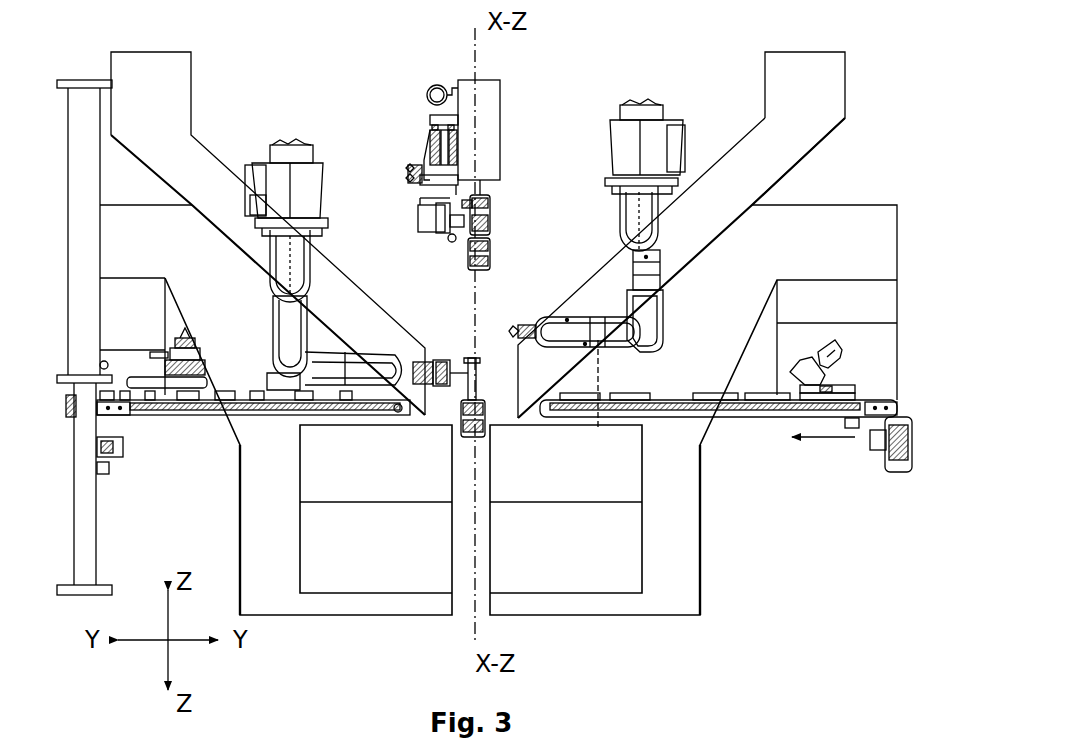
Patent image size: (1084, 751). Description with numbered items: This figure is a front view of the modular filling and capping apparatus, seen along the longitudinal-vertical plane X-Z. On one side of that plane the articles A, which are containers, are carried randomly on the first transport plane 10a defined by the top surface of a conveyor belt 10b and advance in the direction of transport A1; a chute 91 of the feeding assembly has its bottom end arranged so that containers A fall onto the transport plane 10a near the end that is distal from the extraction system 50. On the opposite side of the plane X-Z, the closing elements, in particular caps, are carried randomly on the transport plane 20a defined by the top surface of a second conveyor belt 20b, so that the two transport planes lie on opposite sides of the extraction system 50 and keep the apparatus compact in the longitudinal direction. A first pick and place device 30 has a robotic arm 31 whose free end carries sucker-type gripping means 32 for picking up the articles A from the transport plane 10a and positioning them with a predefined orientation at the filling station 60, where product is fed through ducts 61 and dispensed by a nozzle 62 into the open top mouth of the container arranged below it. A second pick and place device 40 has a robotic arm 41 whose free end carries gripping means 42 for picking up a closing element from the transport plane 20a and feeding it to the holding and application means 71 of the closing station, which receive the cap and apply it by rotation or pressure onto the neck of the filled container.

The first transport plane 10a is at (880, 380).
The conveyor belt 10b is at (713, 417).
The transport plane 20a is at (140, 415).
The conveyor belt 20b is at (215, 415).
The first pick and place device 30 is at (635, 186).
The robotic arm 31 is at (637, 308).
The gripping means 32 is at (491, 380).
The second pick and place device 40 is at (340, 221).
The robotic arm 41 is at (302, 253).
The gripping means 42 is at (453, 365).
The extraction system 50 is at (460, 428).
The filling station 60 is at (488, 237).
The ducts 61 is at (450, 255).
The nozzle 62 is at (470, 246).
The holding and application means 71 is at (490, 268).
The chute 91 is at (863, 335).
The articles A is at (765, 400).
The direction of transport A1 is at (823, 454).